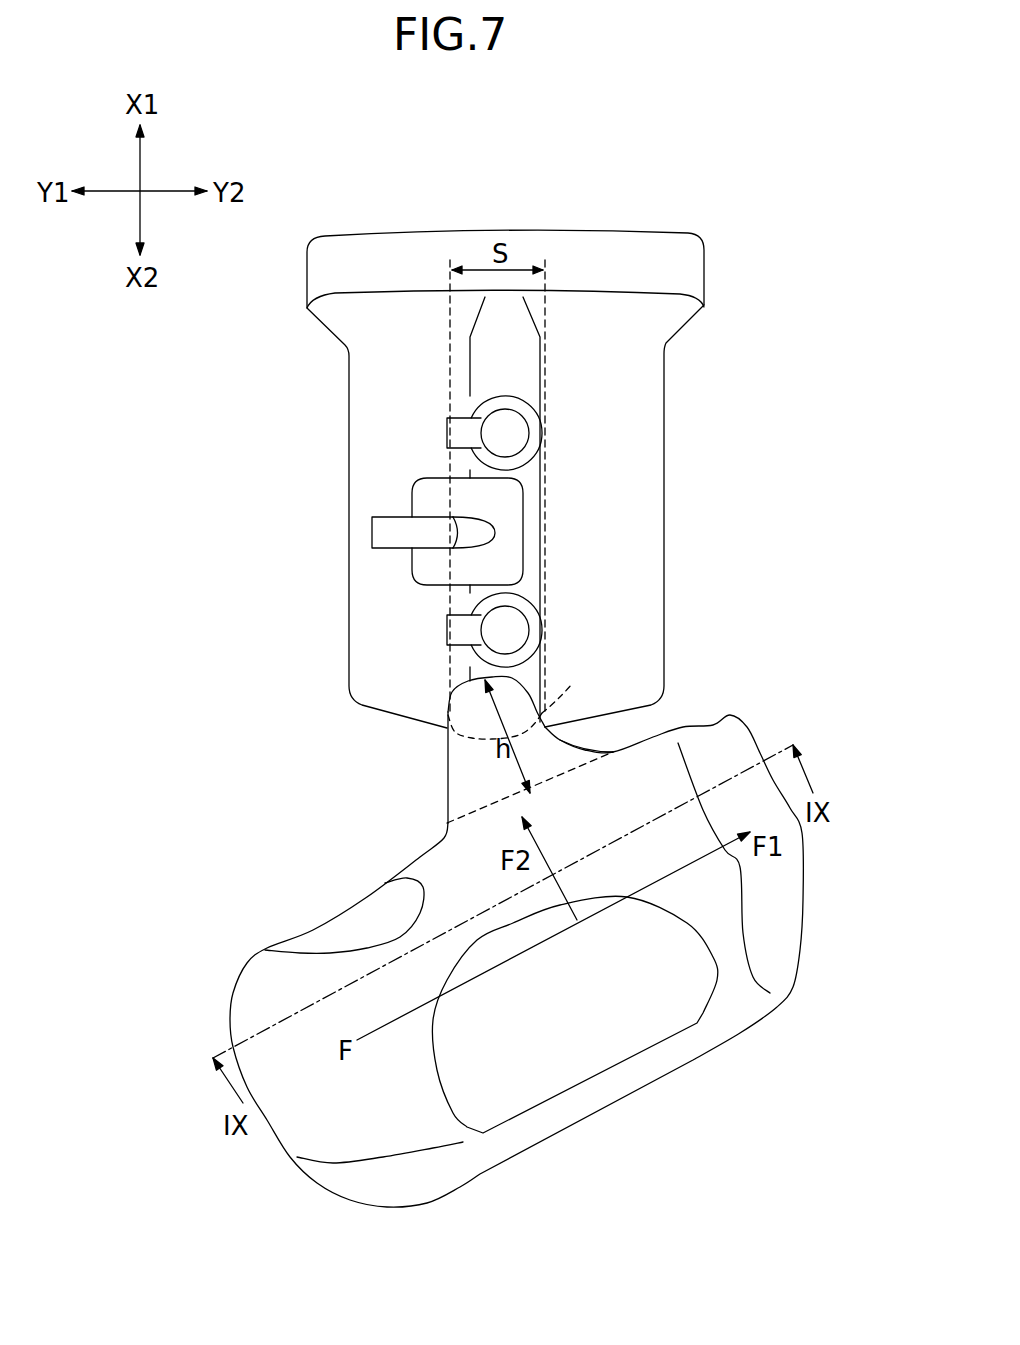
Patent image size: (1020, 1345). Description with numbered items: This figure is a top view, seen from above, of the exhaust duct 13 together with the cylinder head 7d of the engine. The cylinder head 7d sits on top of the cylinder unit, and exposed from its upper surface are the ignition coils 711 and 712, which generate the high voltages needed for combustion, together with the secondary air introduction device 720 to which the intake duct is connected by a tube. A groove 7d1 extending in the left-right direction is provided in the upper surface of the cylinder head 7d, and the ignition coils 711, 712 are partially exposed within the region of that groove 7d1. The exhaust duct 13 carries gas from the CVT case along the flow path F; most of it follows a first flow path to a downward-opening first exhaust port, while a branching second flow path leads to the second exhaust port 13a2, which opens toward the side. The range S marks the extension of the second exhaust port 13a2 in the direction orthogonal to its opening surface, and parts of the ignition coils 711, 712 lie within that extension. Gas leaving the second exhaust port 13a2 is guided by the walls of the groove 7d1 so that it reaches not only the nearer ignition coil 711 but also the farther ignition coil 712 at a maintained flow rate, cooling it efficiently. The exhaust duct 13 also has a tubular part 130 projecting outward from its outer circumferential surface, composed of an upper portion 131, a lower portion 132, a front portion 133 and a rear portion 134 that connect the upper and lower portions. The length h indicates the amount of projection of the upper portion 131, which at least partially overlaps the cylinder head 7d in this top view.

The cylinder head 7d is at (620, 238).
The groove 7d1 is at (541, 371).
The ignition coil 712 is at (447, 432).
The secondary air introduction device 720 is at (412, 490).
The ignition coil 711 is at (447, 630).
The upper portion 131 is at (450, 679).
The second exhaust port 13a2 is at (448, 715).
The lower portion 132 is at (572, 683).
The tubular part 130 is at (445, 757).
The front portion 133 is at (445, 785).
The rear portion 134 is at (580, 740).
The exhaust duct 13 is at (690, 1060).